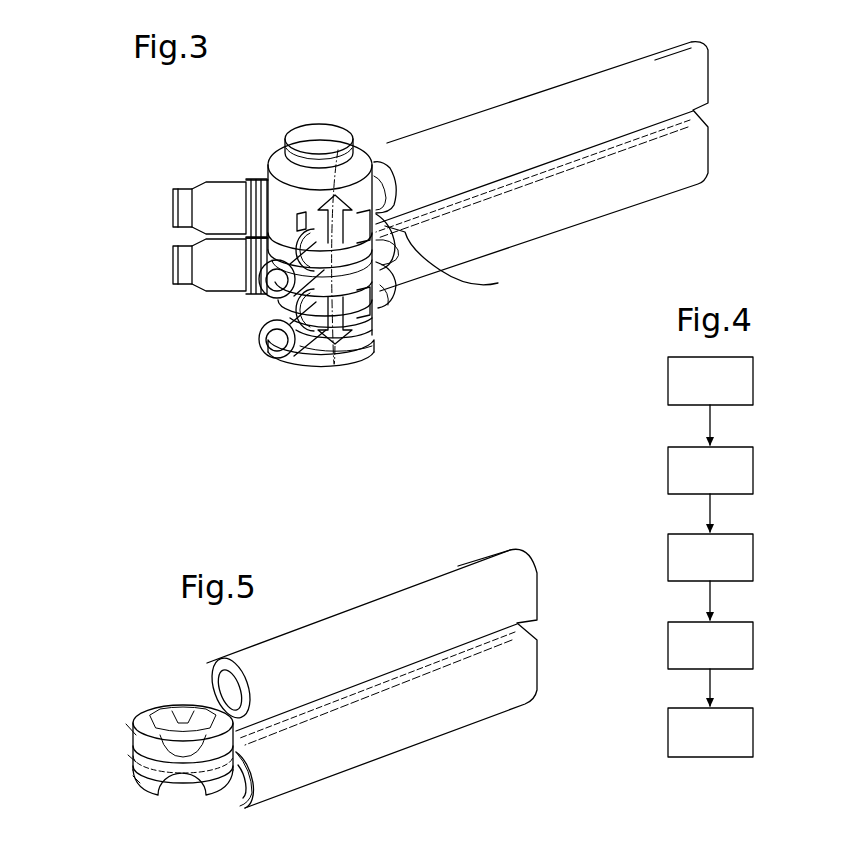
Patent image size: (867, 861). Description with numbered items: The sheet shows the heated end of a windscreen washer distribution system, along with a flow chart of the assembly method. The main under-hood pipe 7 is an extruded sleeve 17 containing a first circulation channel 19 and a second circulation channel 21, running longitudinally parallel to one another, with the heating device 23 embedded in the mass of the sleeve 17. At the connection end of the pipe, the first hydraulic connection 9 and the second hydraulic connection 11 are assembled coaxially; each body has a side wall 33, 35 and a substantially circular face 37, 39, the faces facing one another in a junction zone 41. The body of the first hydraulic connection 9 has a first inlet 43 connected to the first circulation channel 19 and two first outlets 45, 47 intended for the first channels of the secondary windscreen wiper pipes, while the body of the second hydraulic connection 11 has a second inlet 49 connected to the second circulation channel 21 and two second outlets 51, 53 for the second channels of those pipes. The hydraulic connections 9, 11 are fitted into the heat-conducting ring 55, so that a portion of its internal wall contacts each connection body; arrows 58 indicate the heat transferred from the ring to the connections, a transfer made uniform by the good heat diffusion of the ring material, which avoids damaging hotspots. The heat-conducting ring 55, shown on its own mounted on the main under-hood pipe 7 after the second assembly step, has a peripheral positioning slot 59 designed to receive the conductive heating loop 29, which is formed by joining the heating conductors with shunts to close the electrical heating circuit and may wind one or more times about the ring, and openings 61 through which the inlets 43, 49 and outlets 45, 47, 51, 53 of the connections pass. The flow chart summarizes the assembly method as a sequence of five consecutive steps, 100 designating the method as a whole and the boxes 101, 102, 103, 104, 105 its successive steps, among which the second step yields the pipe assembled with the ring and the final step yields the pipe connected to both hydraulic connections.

In FIG. 3, the main under-hood pipe 7 is at (520, 78).
In FIG. 5, the main under-hood pipe 7 is at (377, 580).
In FIG. 3, the extruded sleeve 17 is at (655, 62).
In FIG. 5, the extruded sleeve 17 is at (457, 568).
In FIG. 3, the first hydraulic connection 9 is at (258, 126).
In FIG. 3, the second hydraulic connection 11 is at (353, 368).
In FIG. 3, the circular face 37 is at (315, 128).
In FIG. 3, the arrows 58 is at (338, 150).
In FIG. 3, the first circulation channel 19 is at (374, 170).
In FIG. 3, the first inlet 43 is at (397, 196).
In FIG. 3, the second circulation channel 21 is at (388, 300).
In FIG. 3, the second inlet 49 is at (384, 307).
In FIG. 3, the side wall 33 is at (240, 205).
In FIG. 3, the first outlet 45 is at (172, 216).
In FIG. 3, the second outlet 51 is at (172, 265).
In FIG. 3, the first outlet 47 is at (268, 288).
In FIG. 3, the second outlet 53 is at (268, 343).
In FIG. 3, the circular face 39 is at (338, 357).
In FIG. 3, the side wall 35 is at (372, 318).
In FIG. 3, the junction zone 41 is at (402, 252).
In FIG. 3, the heat-conducting ring 55 is at (498, 283).
In FIG. 5, the heat-conducting ring 55 is at (128, 779).
In FIG. 4, the method 100 is at (646, 421).
In FIG. 4, the step 101 is at (710, 381).
In FIG. 4, the step 102 is at (710, 470).
In FIG. 4, the step 103 is at (710, 557).
In FIG. 4, the step 104 is at (710, 645).
In FIG. 4, the step 105 is at (710, 732).
In FIG. 5, the heating device 23 is at (167, 689).
In FIG. 5, the openings 61 is at (121, 728).
In FIG. 5, the peripheral positioning slot 59 is at (121, 755).
In FIG. 5, the conductive heating loop 29 is at (196, 794).